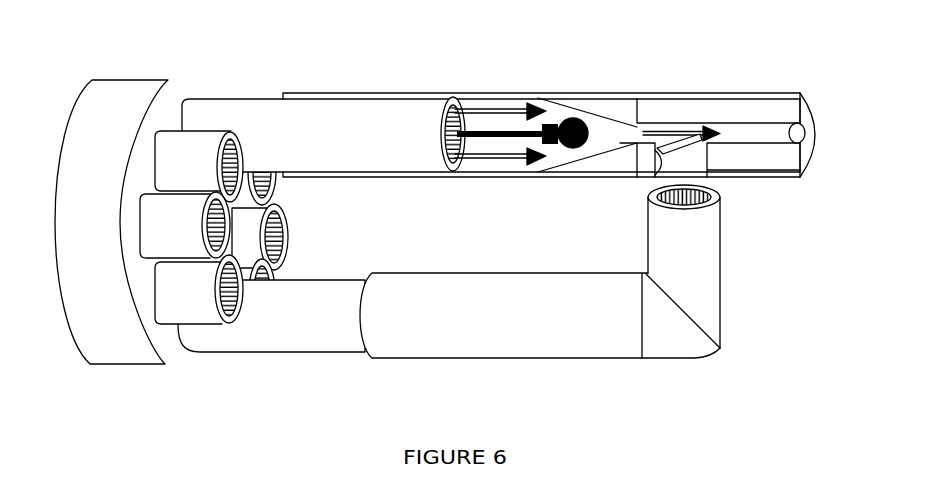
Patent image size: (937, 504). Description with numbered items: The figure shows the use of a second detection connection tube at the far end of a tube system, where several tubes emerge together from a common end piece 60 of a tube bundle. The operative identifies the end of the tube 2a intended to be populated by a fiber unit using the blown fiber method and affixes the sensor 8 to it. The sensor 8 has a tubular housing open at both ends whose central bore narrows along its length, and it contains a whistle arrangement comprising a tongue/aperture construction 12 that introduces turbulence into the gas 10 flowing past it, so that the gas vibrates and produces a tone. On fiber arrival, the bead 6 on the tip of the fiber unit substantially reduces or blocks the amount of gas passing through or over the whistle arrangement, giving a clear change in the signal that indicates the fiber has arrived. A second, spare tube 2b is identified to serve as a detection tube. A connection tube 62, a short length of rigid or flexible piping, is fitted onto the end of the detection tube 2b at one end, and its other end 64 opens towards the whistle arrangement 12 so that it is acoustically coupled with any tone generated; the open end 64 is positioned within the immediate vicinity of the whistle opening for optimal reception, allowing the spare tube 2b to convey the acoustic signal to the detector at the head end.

The flange disc 60 is at (130, 82).
The tube 2a is at (248, 100).
The spare tube 2b is at (320, 280).
The gas 10 is at (490, 110).
The bead 6 is at (574, 118).
The sensor 8 is at (665, 93).
The tongue/aperture construction 12 is at (661, 162).
The connection tube 62 is at (500, 272).
The vertical outlet tube 64 is at (695, 208).